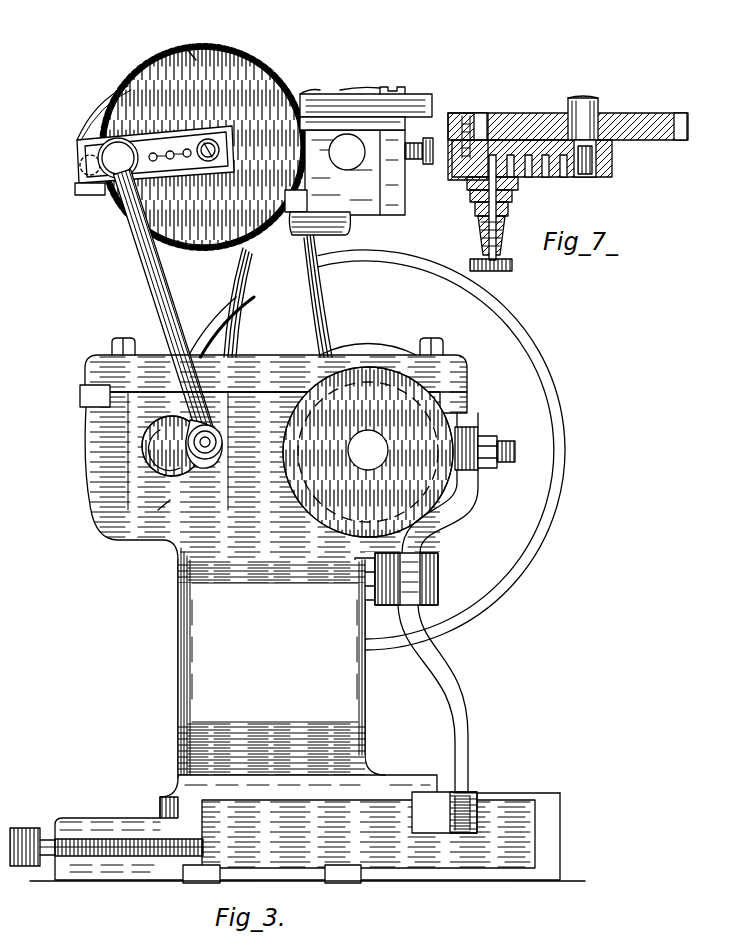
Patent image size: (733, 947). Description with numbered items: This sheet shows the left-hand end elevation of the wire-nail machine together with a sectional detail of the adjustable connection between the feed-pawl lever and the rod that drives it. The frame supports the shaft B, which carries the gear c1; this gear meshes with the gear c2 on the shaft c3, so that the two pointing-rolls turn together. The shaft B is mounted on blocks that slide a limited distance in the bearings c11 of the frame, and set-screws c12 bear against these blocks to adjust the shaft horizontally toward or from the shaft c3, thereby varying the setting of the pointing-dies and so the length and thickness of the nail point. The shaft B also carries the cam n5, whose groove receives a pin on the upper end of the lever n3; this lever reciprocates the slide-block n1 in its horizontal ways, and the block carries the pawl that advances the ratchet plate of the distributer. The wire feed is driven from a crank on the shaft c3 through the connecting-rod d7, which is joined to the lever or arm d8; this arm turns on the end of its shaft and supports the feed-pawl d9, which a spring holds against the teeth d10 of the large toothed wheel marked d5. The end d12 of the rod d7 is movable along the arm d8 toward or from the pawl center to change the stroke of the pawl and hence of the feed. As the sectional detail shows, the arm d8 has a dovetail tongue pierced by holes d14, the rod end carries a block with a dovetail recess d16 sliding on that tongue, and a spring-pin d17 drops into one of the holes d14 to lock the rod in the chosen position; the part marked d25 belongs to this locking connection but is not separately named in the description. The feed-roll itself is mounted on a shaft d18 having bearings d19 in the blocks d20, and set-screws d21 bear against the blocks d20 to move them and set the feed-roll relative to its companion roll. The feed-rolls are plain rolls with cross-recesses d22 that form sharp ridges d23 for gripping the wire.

In FIG. 3, the shaft B is at (372, 452).
In FIG. 3, the gear wheel d5 is at (255, 70).
In FIG. 3, the teeth of the ratchet-wheel d10 is at (193, 42).
In FIG. 3, the blocks d20 is at (375, 178).
In FIG. 3, the cross-recesses d22 is at (330, 84).
In FIG. 3, the sharp ridges d23 is at (390, 90).
In FIG. 3, the shaft d18 is at (346, 133).
In FIG. 3, the set-screws d21 is at (428, 138).
In FIG. 3, the bearings d19 is at (360, 212).
In FIG. 3, the lever d8 is at (150, 141).
In FIG. 7, the lever d8 is at (612, 160).
In FIG. 3, the feed-pawl d9 is at (118, 106).
In FIG. 3, the holes d14 is at (175, 140).
In FIG. 7, the holes d14 is at (585, 177).
In FIG. 3, the end of the connecting-rod d12 is at (110, 158).
In FIG. 3, the connecting-rod d7 is at (150, 262).
In FIG. 3, the gear c2 is at (185, 357).
In FIG. 3, the bearings c11 is at (160, 512).
In FIG. 3, the shaft c3 is at (168, 446).
In FIG. 3, the dovetail recess d16 is at (190, 462).
In FIG. 3, the gear c1 is at (378, 350).
In FIG. 3, the set-screws c12 is at (508, 462).
In FIG. 3, the cam n5 is at (440, 500).
In FIG. 3, the lever n3 is at (470, 742).
In FIG. 3, the slide-block n1 is at (444, 812).
In FIG. 7, the stem d25 is at (518, 190).
In FIG. 7, the spring-pin d17 is at (505, 271).